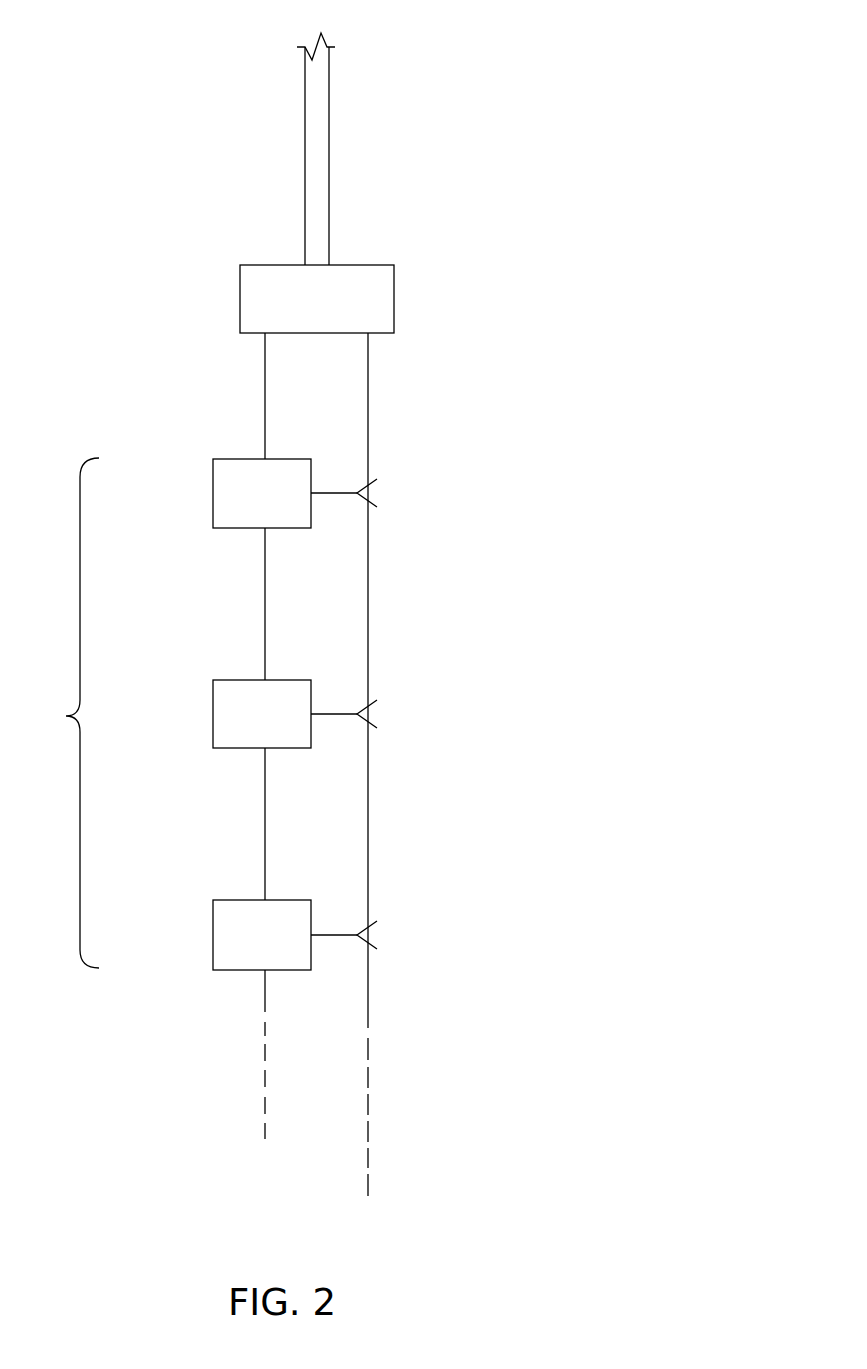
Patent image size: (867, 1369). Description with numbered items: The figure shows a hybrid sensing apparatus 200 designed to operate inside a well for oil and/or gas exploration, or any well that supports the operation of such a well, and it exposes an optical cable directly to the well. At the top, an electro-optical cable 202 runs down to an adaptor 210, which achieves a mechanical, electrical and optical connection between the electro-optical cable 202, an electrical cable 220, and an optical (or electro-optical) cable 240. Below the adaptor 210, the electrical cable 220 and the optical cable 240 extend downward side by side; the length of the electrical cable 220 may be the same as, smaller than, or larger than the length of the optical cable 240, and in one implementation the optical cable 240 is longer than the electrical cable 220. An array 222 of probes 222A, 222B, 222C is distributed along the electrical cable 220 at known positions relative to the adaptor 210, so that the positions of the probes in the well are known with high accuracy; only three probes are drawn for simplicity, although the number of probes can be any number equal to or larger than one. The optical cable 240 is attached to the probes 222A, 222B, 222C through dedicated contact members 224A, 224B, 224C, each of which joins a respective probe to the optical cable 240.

The hybrid sensing apparatus 200 is at (612, 52).
The electro-optical cable 202 is at (329, 146).
The adaptor 210 is at (394, 300).
The electrical cable 220 is at (265, 396).
The array of probes 222 is at (165, 714).
The probe 222A is at (213, 493).
The probe 222B is at (213, 714).
The probe 222C is at (213, 935).
The contact member 224A is at (345, 490).
The contact member 224B is at (345, 711).
The contact member 224C is at (345, 932).
The optical cable 240 is at (369, 578).